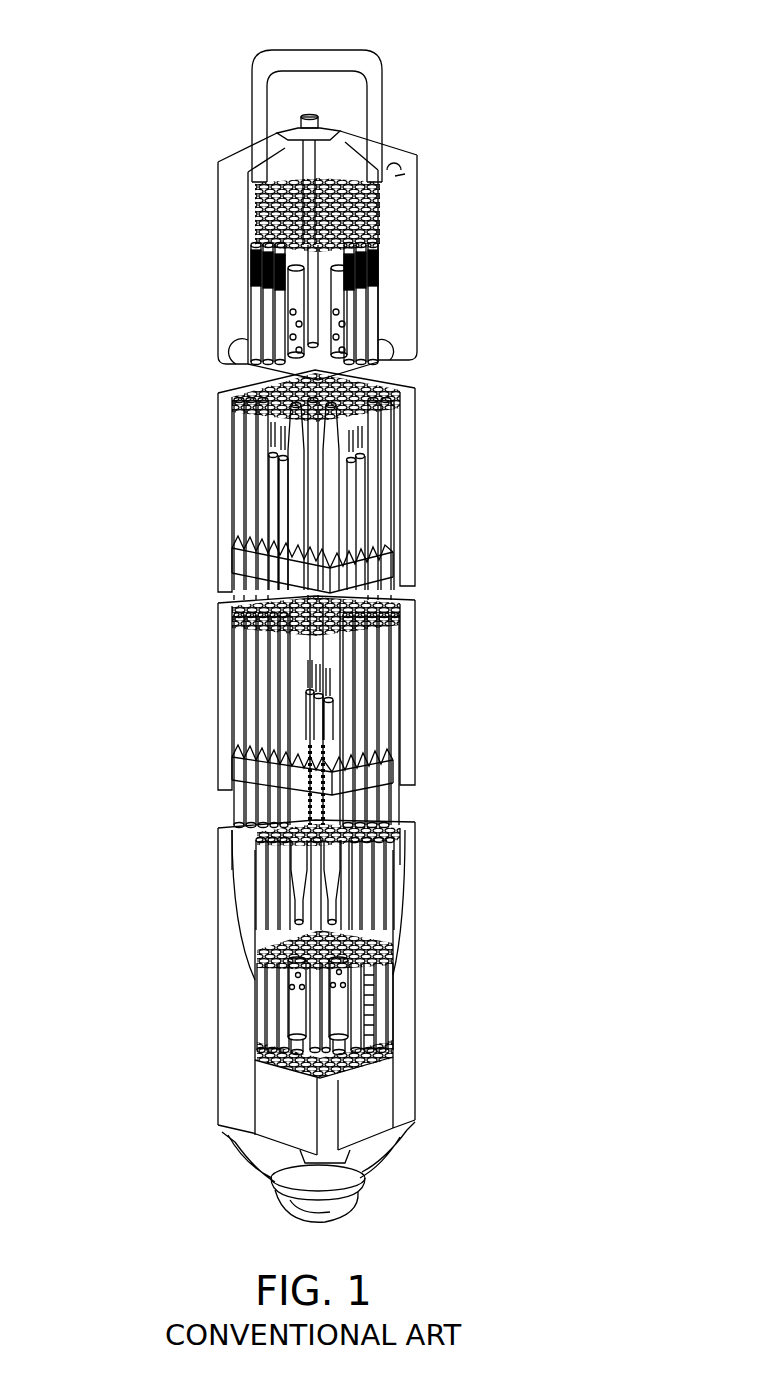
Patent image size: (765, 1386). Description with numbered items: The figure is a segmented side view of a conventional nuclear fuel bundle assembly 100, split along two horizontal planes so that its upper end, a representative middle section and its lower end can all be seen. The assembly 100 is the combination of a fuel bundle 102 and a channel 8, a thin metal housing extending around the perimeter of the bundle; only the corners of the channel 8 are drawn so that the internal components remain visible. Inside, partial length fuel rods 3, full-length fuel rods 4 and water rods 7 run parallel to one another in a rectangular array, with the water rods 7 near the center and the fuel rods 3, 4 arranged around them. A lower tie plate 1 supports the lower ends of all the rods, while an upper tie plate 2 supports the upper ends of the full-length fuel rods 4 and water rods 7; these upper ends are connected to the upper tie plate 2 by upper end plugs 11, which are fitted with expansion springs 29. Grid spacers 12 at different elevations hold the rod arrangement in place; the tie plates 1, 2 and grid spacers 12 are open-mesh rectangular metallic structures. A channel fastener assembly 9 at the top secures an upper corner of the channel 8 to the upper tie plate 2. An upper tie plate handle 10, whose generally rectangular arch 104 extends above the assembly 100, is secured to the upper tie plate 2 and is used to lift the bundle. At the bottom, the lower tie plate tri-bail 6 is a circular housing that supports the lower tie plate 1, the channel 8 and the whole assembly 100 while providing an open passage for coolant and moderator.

The fuel bundle assembly 100 is at (430, 315).
The rectangular arch 104 is at (310, 48).
The upper tie plate handle 10 is at (384, 97).
The channel fastener assembly 9 is at (292, 126).
The upper tie plate 2 is at (278, 236).
The expansion springs 29 is at (370, 253).
The upper end plugs 11 is at (376, 280).
The full-length fuel rods 4 is at (262, 490).
The water rods 7 is at (300, 462).
The partial length fuel rods 3 is at (330, 720).
The grid spacers 12 is at (235, 560).
The fuel bundle 102 is at (245, 692).
The channel 8 is at (216, 757).
The lower tie plate 1 is at (362, 1110).
The lower tie plate tri-bail 6 is at (282, 1212).